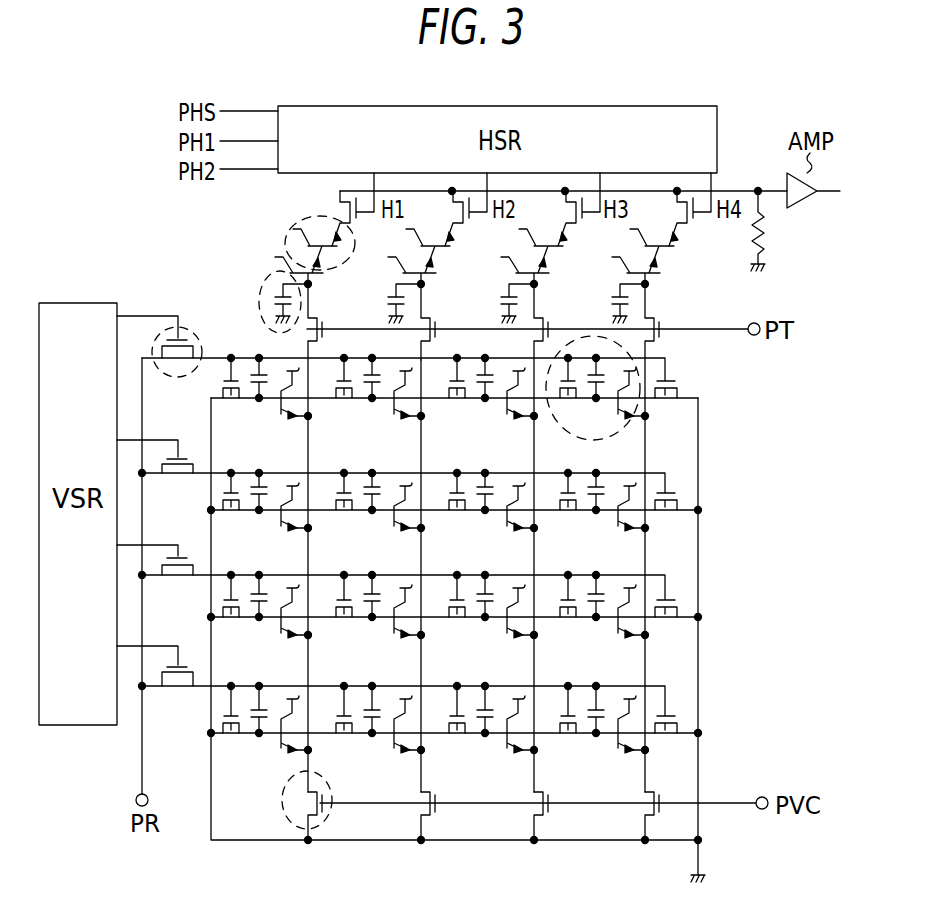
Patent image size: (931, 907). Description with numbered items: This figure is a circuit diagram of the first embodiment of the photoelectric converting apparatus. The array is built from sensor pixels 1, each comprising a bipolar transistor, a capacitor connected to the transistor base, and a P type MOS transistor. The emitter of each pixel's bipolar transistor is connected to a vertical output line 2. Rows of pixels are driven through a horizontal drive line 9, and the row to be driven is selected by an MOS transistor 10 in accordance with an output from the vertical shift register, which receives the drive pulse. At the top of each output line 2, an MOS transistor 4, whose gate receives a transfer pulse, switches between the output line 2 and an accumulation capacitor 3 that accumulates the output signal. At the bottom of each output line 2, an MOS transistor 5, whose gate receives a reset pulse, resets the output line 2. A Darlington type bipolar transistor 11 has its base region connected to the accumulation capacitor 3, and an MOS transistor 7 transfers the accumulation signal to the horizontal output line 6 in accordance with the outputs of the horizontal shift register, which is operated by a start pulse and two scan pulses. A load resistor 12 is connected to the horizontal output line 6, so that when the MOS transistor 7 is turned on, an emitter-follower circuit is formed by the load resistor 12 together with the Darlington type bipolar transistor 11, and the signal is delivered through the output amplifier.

The sensor pixel 1 is at (548, 430).
The output line 2 is at (648, 448).
The accumulation capacitor 3 is at (262, 290).
The MOS transistor 4 is at (440, 317).
The MOS transistor 5 is at (334, 785).
The horizontal output line 6 is at (737, 188).
The MOS transistor 7 is at (337, 208).
The horizontal drive line 9 is at (218, 355).
The MOS transistor 10 is at (200, 336).
The Darlington type bipolar transistor 11 is at (290, 218).
The load resistor 12 is at (765, 236).